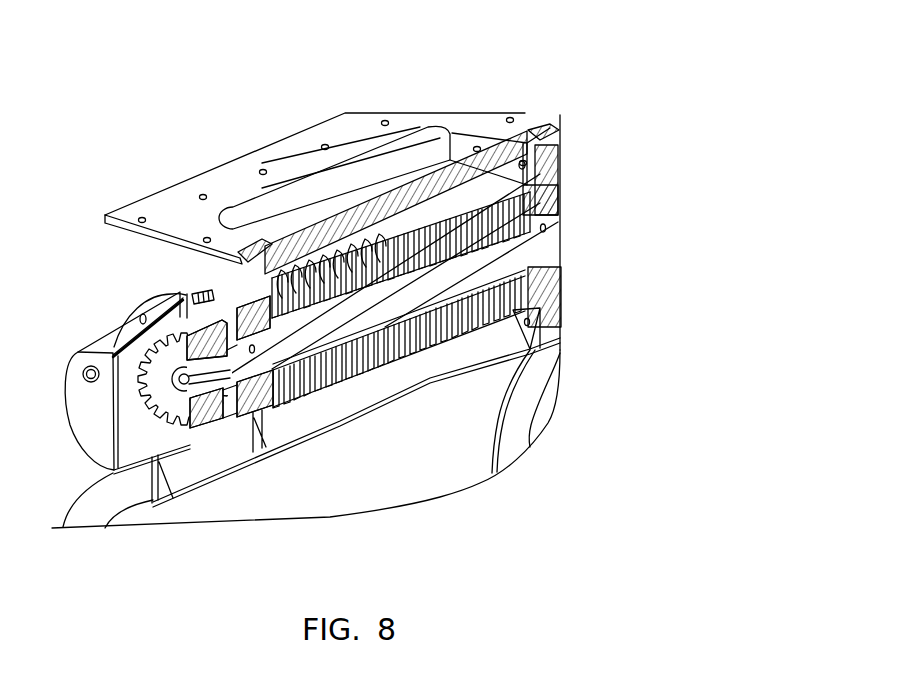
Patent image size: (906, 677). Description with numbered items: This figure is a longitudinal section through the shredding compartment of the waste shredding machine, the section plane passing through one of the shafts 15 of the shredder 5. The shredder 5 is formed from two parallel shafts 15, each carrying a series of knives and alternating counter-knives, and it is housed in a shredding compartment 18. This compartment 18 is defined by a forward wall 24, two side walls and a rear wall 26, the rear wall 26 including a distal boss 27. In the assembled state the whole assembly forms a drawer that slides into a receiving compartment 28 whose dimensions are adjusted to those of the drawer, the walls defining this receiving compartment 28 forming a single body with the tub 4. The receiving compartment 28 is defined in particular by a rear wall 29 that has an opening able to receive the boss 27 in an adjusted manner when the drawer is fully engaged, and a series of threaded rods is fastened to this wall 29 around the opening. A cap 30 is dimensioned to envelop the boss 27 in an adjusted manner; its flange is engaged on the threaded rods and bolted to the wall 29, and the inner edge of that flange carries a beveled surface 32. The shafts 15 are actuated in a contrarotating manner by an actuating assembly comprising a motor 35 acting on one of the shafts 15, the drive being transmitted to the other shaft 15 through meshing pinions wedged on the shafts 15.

The tub 4 is at (266, 490).
The shredder 5 is at (382, 222).
The shaft 15 is at (385, 313).
The shredding compartment 18 is at (499, 186).
The forward wall 24 is at (557, 167).
The rear wall 26 is at (253, 245).
The distal boss 27 is at (190, 313).
The receiving compartment 28 is at (283, 200).
The rear wall 29 is at (135, 241).
The cap 30 is at (104, 345).
The beveled surface 32 is at (206, 438).
The motor 35 is at (164, 398).